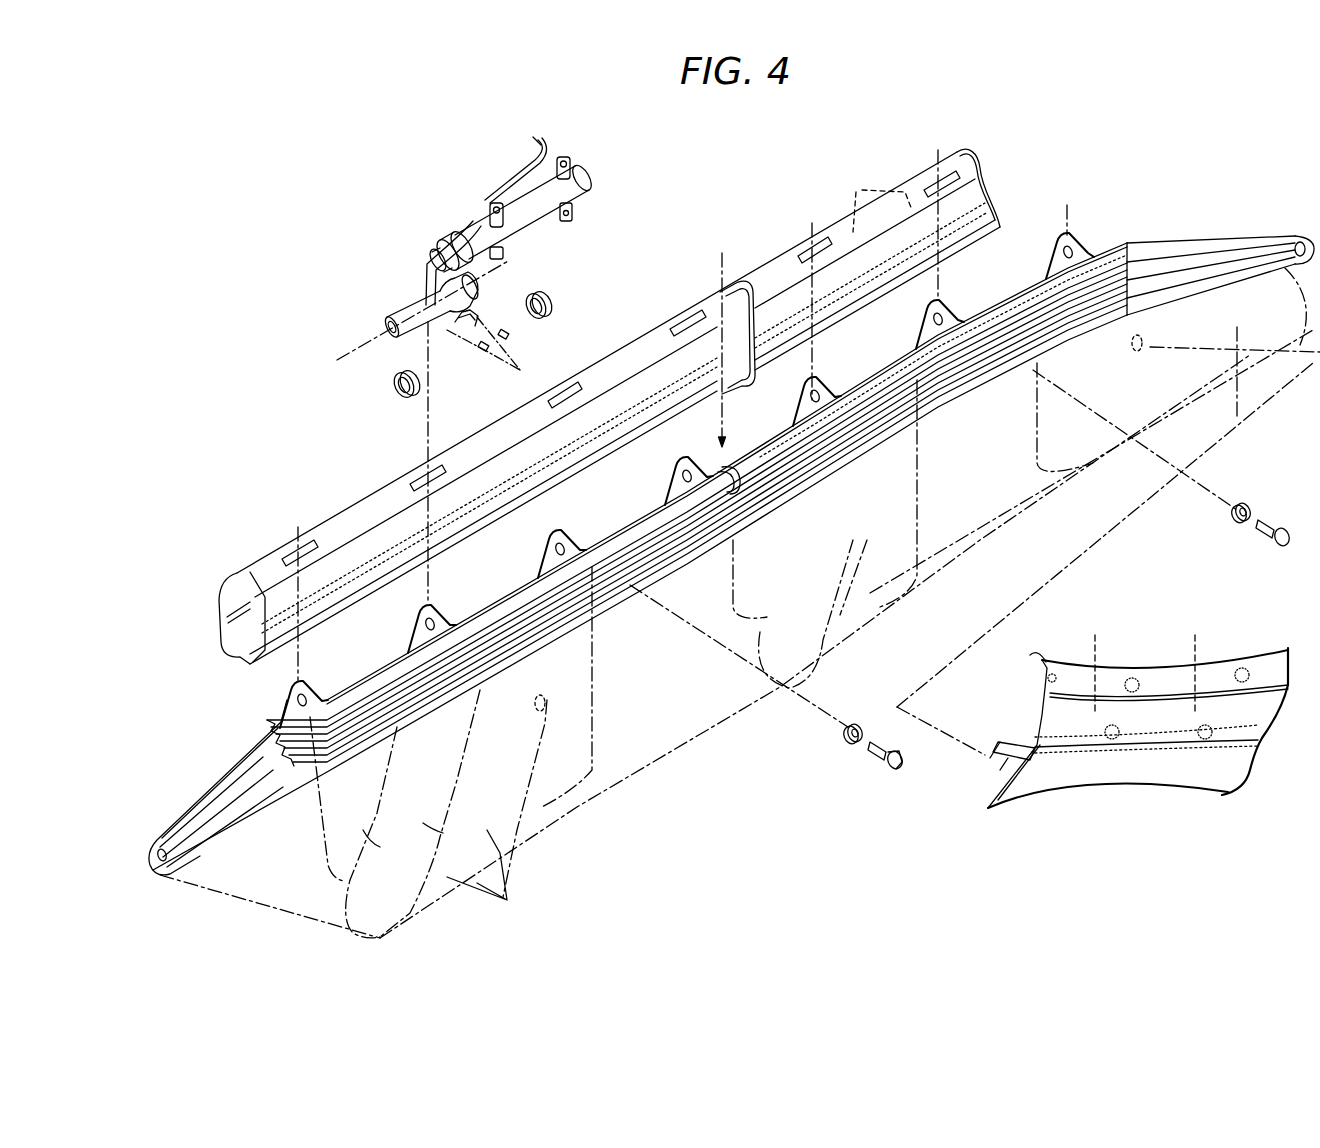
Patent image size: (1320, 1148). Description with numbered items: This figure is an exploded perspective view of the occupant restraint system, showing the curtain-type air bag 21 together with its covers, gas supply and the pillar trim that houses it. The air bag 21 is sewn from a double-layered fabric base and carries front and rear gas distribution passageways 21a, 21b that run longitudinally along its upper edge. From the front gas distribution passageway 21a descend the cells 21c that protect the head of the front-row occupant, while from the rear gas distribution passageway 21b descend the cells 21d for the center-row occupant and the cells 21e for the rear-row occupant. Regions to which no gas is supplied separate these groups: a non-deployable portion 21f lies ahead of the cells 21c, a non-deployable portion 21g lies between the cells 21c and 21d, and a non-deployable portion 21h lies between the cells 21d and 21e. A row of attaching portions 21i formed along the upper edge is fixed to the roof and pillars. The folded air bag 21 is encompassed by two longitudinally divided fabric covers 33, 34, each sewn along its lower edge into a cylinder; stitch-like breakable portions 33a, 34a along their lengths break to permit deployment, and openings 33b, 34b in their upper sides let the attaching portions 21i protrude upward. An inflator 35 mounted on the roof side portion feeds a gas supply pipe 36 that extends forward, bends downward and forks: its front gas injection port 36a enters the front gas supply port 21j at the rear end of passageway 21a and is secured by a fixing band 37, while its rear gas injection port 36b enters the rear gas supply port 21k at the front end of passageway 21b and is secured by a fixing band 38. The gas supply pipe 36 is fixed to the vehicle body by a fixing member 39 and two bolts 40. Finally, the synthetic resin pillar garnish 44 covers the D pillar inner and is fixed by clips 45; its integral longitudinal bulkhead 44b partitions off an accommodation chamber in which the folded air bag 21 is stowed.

The air bag 21 is at (1168, 232).
The front gas distribution passageway 21a is at (632, 530).
The rear gas distribution passageway 21b is at (1023, 290).
The cells 21c is at (422, 630).
The cells 21d is at (860, 637).
The cells 21e is at (1230, 305).
The non-deployable portion 21f is at (262, 880).
The non-deployable portion 21g is at (667, 727).
The non-deployable portion 21h is at (983, 507).
The attaching portions 21i is at (1075, 240).
The front gas supply port 21j is at (722, 464).
The rear gas supply port 21k is at (740, 460).
The fabric cover 33 is at (352, 503).
The breakable portions 33a is at (235, 612).
The openings 33b is at (298, 552).
The fabric cover 34 is at (826, 222).
The breakable portions 34a is at (857, 182).
The openings 34b is at (805, 252).
The inflator 35 is at (538, 212).
The gas supply pipe 36 is at (425, 270).
The gas injection port 36a is at (390, 318).
The gas injection port 36b is at (462, 293).
The fixing band 37 is at (392, 385).
The fixing band 38 is at (552, 300).
The fixing member 39 is at (478, 315).
The bolts 40 is at (521, 372).
The pillar garnish 44 is at (1099, 798).
The bulkhead 44b is at (1000, 745).
The clips 45 is at (1028, 742).